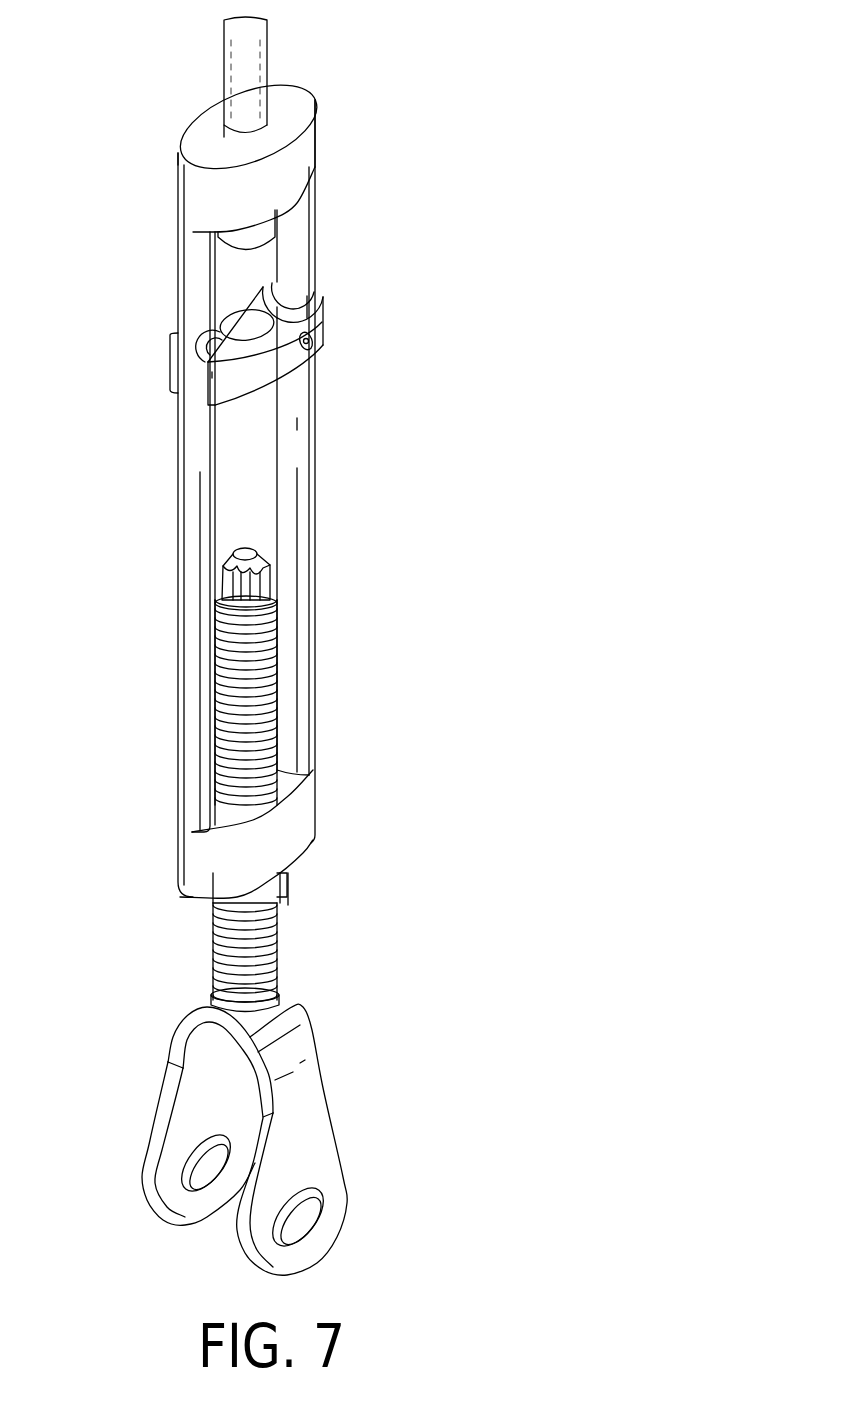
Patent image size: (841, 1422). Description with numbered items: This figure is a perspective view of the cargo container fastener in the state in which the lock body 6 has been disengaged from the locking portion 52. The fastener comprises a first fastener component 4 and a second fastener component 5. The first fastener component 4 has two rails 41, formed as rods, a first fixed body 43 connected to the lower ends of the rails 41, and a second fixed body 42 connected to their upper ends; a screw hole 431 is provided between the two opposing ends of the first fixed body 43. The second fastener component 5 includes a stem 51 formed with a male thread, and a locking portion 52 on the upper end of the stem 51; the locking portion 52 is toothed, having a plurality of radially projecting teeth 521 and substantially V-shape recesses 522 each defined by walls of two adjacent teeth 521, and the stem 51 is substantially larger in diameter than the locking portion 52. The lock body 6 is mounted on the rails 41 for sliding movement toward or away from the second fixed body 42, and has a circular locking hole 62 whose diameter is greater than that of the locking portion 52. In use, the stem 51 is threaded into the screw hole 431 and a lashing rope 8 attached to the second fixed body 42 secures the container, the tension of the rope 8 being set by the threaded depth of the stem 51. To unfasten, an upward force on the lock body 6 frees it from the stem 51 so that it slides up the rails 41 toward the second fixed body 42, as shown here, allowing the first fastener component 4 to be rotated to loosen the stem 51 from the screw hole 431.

The lashing rope 8 is at (278, 55).
The second fixed body 42 is at (308, 137).
The first fastener component 4 is at (288, 502).
The rails 41 is at (177, 470).
The first fixed body 43 is at (310, 810).
The screw hole 431 is at (263, 810).
The lock body 6 is at (274, 327).
The locking hole 62 is at (247, 325).
The second fastener component 5 is at (273, 890).
The stem 51 is at (258, 702).
The locking portion 52 is at (273, 560).
The teeth 521 is at (262, 592).
The V-shape recesses 522 is at (232, 590).